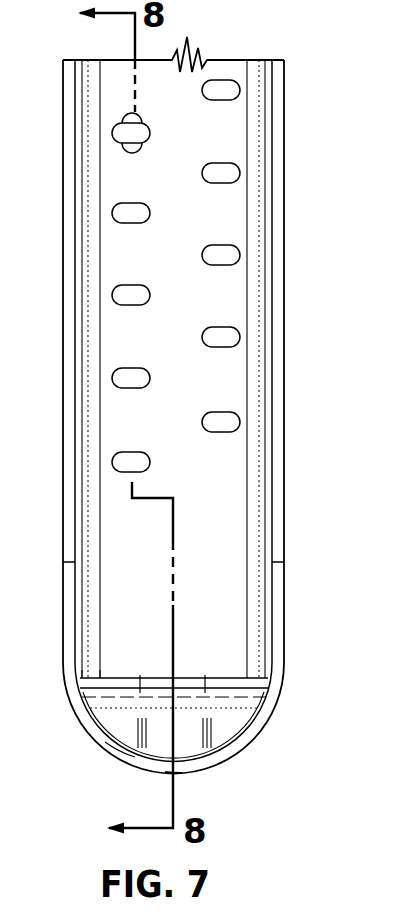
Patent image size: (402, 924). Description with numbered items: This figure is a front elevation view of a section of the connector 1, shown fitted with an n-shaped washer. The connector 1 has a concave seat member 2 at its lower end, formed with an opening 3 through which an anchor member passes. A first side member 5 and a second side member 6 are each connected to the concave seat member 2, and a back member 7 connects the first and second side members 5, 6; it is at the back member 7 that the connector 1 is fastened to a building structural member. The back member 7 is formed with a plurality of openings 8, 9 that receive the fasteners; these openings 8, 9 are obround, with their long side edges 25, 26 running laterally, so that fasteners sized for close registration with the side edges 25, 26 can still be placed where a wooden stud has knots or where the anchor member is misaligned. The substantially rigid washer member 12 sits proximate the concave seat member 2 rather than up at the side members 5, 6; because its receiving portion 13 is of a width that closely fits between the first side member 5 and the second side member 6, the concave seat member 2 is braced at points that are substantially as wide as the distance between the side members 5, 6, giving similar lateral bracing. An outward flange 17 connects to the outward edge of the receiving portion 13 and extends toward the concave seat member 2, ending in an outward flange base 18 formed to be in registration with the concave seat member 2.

The connector 1 is at (287, 177).
The concave seat member 2 is at (253, 735).
The opening 3 is at (200, 765).
The first side member 5 is at (63, 450).
The second side member 6 is at (284, 428).
The back member 7 is at (213, 531).
The opening 8 is at (150, 461).
The opening 9 is at (203, 100).
The washer member 12 is at (226, 672).
The receiving portion 13 is at (120, 677).
The outward flange 17 is at (126, 720).
The outward flange base 18 is at (128, 752).
The long side edge 25 is at (135, 123).
The long side edge 26 is at (130, 142).